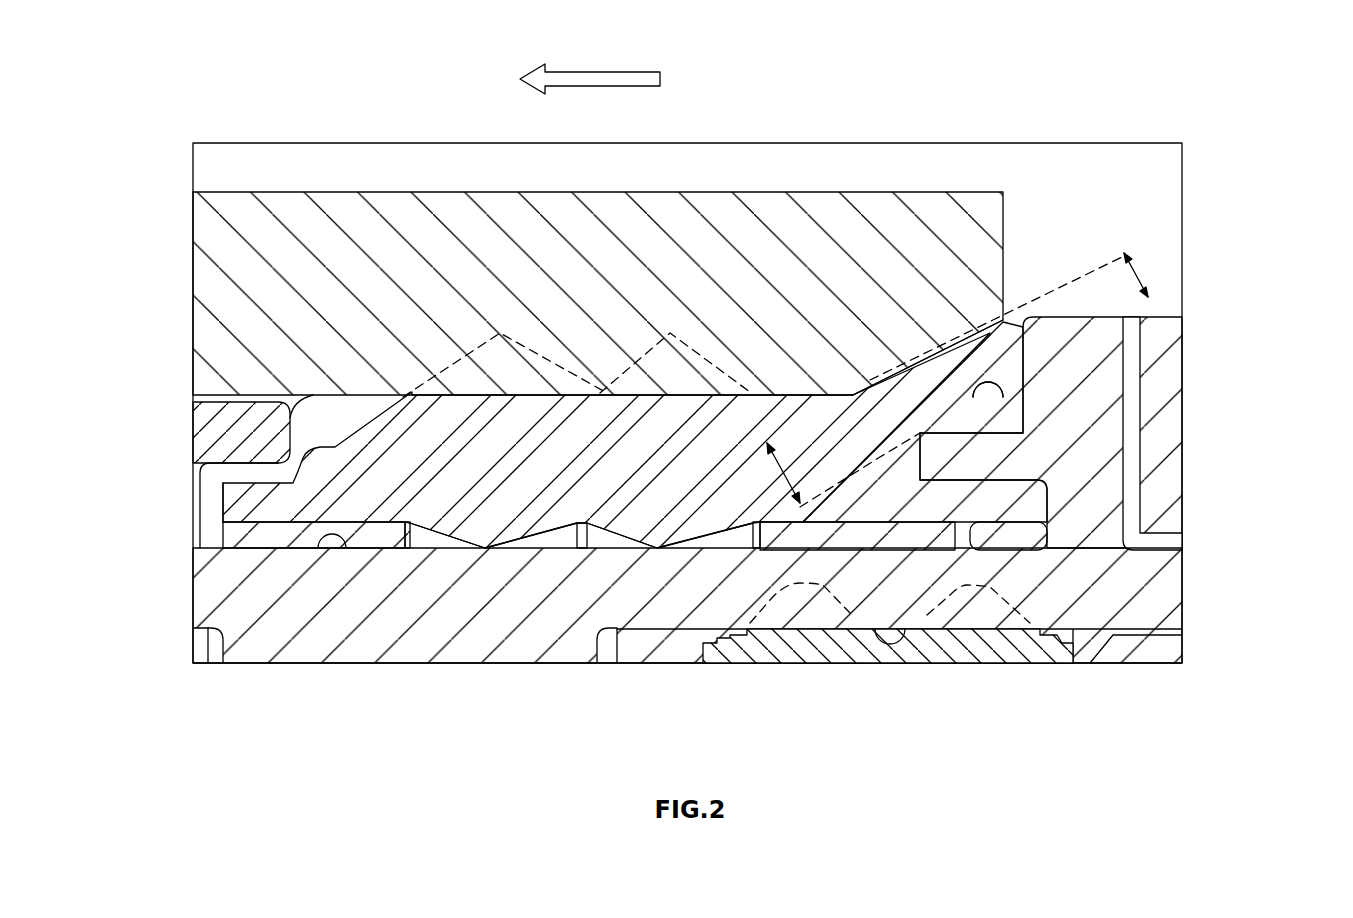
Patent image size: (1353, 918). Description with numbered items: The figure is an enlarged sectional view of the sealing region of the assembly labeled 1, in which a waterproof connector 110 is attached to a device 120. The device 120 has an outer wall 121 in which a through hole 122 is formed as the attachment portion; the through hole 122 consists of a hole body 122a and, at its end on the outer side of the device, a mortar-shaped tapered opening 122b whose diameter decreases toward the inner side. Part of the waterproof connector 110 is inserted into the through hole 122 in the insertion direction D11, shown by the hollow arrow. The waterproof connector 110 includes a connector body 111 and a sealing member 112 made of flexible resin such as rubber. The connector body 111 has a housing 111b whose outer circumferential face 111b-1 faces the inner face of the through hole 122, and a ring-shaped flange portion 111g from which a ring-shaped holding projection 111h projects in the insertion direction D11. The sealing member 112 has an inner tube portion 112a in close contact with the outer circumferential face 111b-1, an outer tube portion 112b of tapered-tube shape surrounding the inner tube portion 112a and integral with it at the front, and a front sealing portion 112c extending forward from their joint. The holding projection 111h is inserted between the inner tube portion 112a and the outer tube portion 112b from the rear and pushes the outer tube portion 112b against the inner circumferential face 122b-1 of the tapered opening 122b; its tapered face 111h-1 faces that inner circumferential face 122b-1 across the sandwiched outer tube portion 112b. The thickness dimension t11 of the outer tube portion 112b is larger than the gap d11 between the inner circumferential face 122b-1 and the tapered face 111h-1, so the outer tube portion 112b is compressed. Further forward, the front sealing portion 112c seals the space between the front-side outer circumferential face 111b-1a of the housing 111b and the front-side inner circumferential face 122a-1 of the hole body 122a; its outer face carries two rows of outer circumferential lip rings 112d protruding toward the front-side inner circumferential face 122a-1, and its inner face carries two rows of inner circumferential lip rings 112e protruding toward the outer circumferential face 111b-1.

The connector assembly 1 is at (893, 122).
The waterproof connector 110 is at (1190, 328).
The connector body 111 is at (1186, 561).
The housing 111b is at (1023, 595).
The outer circumferential face of the housing 111b-1 is at (900, 545).
The front-side outer circumferential face 111b-1a is at (335, 550).
The flange portion 111g is at (1131, 348).
The holding projection 111h is at (985, 376).
The tapered face 111h-1 is at (1163, 386).
The sealing member 112 is at (847, 533).
The inner tube portion 112a is at (1003, 500).
The outer tube portion 112b is at (920, 398).
The front sealing portion 112c is at (200, 560).
The outer circumferential lip rings 112d is at (633, 345).
The inner circumferential lip rings 112e is at (605, 525).
The device 120 is at (192, 277).
The outer wall 121 is at (568, 290).
The through hole 122 is at (290, 418).
The hole body 122a is at (197, 427).
The front-side inner circumferential face 122a-1 is at (198, 420).
The tapered opening 122b is at (1003, 322).
The inner circumferential face of the tapered opening 122b-1 is at (1018, 242).
The insertion direction D11 is at (590, 59).
The gap d11 is at (1148, 275).
The thickness dimension t11 is at (778, 512).